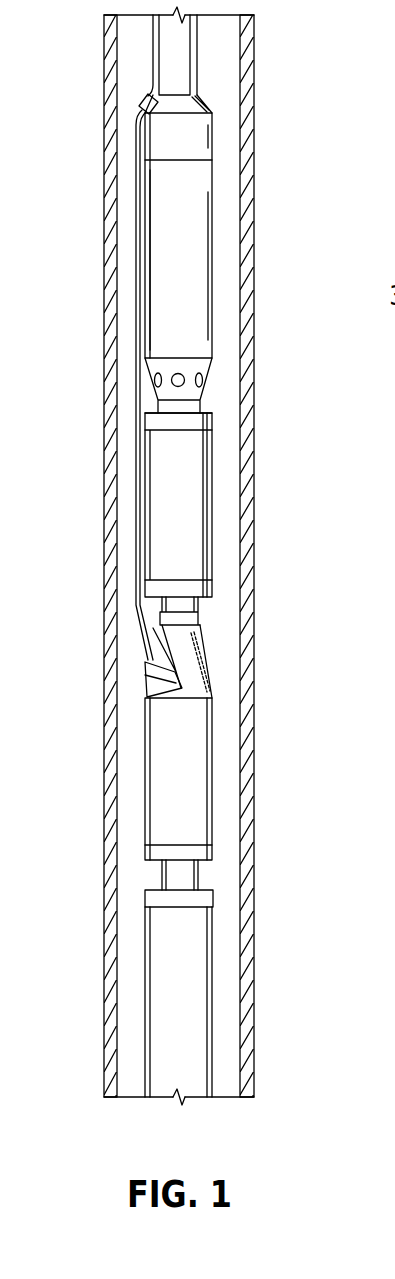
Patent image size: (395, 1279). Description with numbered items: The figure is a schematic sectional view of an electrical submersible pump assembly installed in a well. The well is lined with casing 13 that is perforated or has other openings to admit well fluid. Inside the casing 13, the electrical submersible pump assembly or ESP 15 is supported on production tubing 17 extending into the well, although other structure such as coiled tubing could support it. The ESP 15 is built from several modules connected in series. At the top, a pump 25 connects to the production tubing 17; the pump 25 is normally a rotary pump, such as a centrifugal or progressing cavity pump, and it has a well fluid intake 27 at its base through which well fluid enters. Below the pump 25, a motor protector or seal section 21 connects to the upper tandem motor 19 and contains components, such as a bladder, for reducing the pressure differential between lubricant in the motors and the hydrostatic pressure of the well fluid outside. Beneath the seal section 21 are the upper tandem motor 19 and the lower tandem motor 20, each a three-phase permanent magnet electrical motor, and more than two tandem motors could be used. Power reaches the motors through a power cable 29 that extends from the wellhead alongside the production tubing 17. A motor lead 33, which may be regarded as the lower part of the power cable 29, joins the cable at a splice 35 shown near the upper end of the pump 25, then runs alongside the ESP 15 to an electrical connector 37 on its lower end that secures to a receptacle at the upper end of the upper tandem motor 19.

The casing 13 is at (247, 97).
The electrical submersible pump assembly 15 is at (228, 434).
The production tubing 17 is at (182, 43).
The upper tandem motor 19 is at (185, 733).
The lower tandem motor 20 is at (185, 963).
The seal section 21 is at (188, 525).
The pump 25 is at (198, 182).
The well fluid intake 27 is at (172, 377).
The power cable 29 is at (148, 94).
The motor lead 33 is at (162, 243).
The splice 35 is at (140, 100).
The electrical connector 37 is at (145, 673).